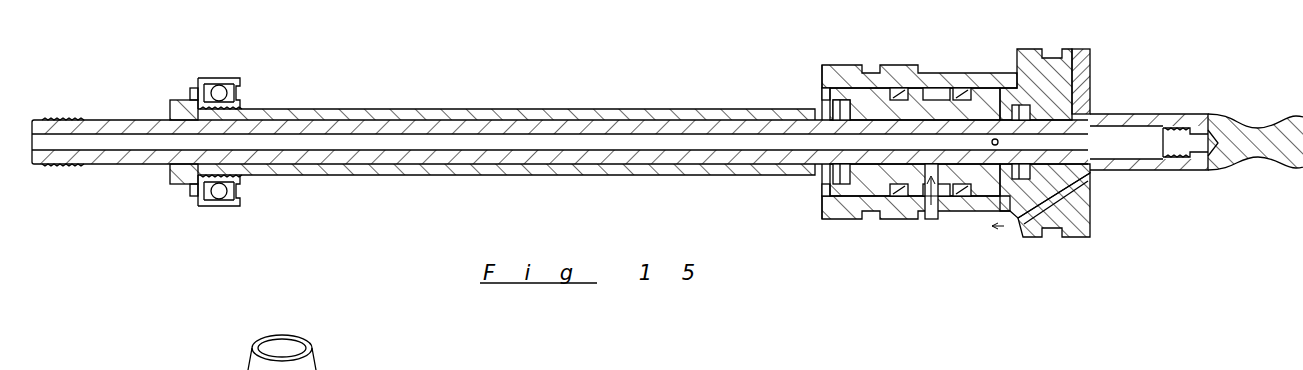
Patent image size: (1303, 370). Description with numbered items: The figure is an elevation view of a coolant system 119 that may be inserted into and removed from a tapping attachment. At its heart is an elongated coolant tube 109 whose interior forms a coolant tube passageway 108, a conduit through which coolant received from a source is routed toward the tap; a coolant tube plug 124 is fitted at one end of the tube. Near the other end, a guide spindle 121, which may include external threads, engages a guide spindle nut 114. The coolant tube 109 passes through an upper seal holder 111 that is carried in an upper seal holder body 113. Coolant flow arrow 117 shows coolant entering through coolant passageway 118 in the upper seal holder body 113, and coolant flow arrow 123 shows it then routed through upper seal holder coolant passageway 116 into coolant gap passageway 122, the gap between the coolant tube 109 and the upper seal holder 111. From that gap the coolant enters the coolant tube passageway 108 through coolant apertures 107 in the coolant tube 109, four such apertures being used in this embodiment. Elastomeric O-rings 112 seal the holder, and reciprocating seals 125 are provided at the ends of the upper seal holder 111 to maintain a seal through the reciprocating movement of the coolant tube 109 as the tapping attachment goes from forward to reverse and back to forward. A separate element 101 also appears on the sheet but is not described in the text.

The cylinder 101 is at (378, 368).
The coolant apertures 107 is at (993, 138).
The coolant tube passageway 108 is at (625, 155).
The coolant tube 109 is at (397, 126).
The upper seal holder 111 is at (998, 72).
The elastomeric O-rings 112 is at (975, 72).
The upper seal holder body 113 is at (1082, 56).
The guide spindle nut 114 is at (190, 102).
The upper seal holder coolant passageway 116 is at (913, 205).
The coolant flow arrow 117 is at (1093, 181).
The coolant passageway 118 is at (1080, 238).
The coolant system 119 is at (942, 146).
The guide spindle 121 is at (625, 112).
The coolant gap passageway 122 is at (858, 160).
The coolant flow arrow 123 is at (933, 212).
The coolant tube plug 124 is at (1214, 168).
The reciprocating seals 125 is at (842, 118).